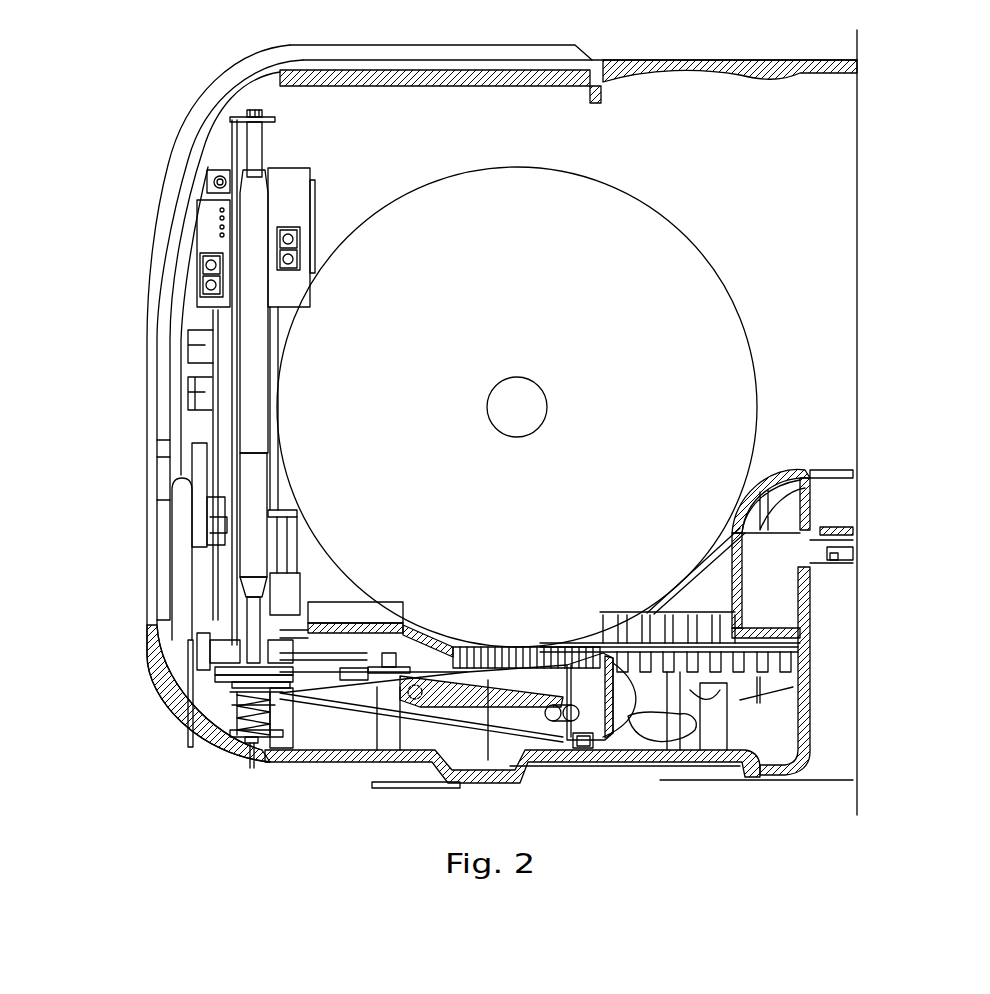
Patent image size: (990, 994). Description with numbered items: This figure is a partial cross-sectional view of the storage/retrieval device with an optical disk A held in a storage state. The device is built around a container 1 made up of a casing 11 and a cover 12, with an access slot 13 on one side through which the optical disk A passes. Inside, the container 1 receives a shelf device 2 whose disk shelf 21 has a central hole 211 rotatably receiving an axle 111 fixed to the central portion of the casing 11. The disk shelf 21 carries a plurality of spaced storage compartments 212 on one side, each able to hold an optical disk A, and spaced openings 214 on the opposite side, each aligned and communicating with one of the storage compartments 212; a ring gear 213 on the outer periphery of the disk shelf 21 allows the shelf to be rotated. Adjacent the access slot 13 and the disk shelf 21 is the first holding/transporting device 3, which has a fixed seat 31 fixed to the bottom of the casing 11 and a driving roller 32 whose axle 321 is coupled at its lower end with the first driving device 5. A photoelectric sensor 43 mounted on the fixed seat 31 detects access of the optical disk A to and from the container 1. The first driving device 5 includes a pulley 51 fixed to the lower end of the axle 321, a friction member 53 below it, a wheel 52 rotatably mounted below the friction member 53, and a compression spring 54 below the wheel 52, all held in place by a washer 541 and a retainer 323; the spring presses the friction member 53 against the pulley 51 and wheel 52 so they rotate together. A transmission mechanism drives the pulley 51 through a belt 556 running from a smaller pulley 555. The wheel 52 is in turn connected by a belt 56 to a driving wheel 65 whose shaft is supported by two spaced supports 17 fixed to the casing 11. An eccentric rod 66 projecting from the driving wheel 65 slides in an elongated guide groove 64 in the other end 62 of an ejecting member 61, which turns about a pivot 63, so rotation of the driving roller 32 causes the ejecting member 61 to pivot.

The container 1 is at (138, 661).
The casing 11 is at (697, 752).
The axle 111 is at (805, 655).
The cover 12 is at (283, 66).
The access slot 13 is at (176, 346).
The shelf device 2 is at (845, 548).
The disk shelf 21 is at (760, 560).
The central hole 211 is at (803, 630).
The storage compartment 212 is at (330, 604).
The ring gear 213 is at (423, 670).
The opening 214 is at (650, 613).
The first holding/transporting device 3 is at (220, 142).
The fixed seat 31 is at (232, 177).
The driving roller 32 is at (257, 218).
The axle 321 is at (250, 125).
The retainer 323 is at (262, 747).
The photoelectric sensor 43 is at (290, 231).
The first driving device 5 is at (234, 744).
The pulley 51 is at (248, 683).
The wheel 52 is at (240, 712).
The friction member 53 is at (237, 695).
The compression spring 54 is at (243, 728).
The washer 541 is at (250, 747).
The pulley 555 is at (393, 665).
The belt 556 is at (352, 677).
The belt 56 is at (325, 703).
The ejecting member 61 is at (488, 700).
The other end 62 is at (600, 654).
The pivot 63 is at (455, 652).
The elongated guide groove 64 is at (553, 721).
The driving wheel 65 is at (633, 743).
The eccentric rod 66 is at (568, 722).
The support 17 is at (600, 743).
The optical disk A is at (734, 305).